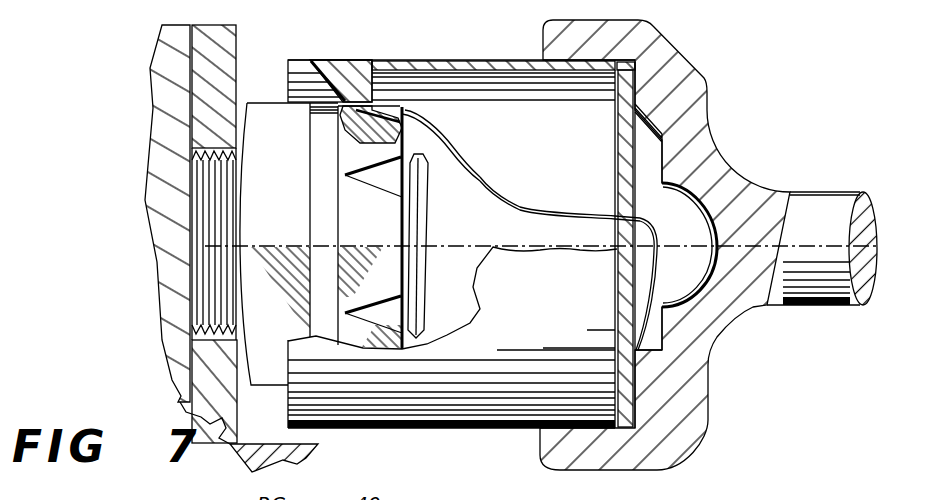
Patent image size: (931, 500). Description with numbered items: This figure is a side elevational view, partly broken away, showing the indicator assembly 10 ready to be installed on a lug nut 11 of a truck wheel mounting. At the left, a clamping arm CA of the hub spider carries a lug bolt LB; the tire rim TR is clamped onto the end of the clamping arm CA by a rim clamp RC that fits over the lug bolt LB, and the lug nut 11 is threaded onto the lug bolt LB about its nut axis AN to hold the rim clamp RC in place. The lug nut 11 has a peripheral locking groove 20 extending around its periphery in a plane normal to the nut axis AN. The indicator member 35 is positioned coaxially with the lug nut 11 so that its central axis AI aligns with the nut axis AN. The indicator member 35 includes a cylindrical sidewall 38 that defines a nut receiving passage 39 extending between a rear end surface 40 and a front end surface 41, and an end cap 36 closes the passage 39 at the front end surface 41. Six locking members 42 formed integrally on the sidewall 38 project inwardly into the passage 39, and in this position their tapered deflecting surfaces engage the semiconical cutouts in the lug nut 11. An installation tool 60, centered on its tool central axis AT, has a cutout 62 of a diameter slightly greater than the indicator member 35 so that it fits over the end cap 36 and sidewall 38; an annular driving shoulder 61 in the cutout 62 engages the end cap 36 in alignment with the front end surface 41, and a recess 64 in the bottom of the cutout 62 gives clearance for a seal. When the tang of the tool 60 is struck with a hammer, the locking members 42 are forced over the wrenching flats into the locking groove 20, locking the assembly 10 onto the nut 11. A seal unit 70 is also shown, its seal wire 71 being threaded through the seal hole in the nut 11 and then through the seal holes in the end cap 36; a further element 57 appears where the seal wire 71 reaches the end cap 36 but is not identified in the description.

The clamping arms CA is at (153, 89).
The rim clamps RC is at (233, 42).
The tire rim TR is at (306, 447).
The lug nut 11 is at (262, 98).
The peripheral locking groove 20 is at (318, 163).
The nut axis AN is at (327, 246).
The rear end surface 40 is at (289, 62).
The locking members 42 is at (360, 80).
The indicator assembly 10 is at (468, 40).
The indicator member 35 is at (418, 62).
The cylindrical sidewall 38 is at (532, 62).
The nut receiving passage 39 is at (582, 142).
The front end surface 41 is at (637, 58).
The annular driving shoulder 61 is at (637, 72).
The seal wire 71 is at (468, 147).
The seal unit 70 is at (552, 199).
The spring finger end 57 is at (622, 215).
The end cap 36 is at (640, 262).
The cutout 62 is at (650, 166).
The recess 64 is at (710, 232).
The installation tool 60 is at (742, 178).
The tool central axis AT is at (726, 252).
The central axis AI is at (480, 245).
The lug bolts LB is at (420, 218).